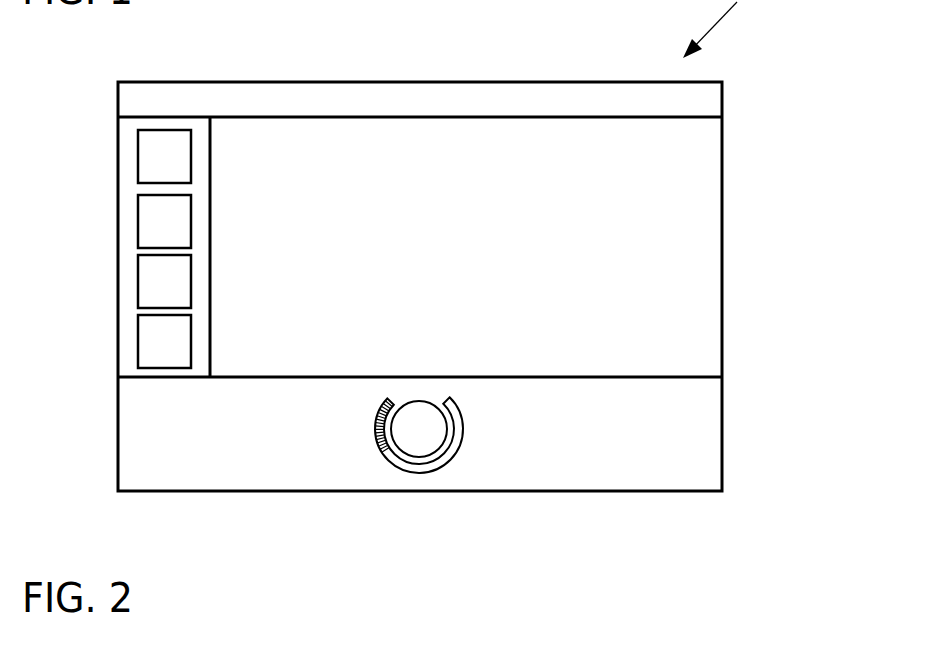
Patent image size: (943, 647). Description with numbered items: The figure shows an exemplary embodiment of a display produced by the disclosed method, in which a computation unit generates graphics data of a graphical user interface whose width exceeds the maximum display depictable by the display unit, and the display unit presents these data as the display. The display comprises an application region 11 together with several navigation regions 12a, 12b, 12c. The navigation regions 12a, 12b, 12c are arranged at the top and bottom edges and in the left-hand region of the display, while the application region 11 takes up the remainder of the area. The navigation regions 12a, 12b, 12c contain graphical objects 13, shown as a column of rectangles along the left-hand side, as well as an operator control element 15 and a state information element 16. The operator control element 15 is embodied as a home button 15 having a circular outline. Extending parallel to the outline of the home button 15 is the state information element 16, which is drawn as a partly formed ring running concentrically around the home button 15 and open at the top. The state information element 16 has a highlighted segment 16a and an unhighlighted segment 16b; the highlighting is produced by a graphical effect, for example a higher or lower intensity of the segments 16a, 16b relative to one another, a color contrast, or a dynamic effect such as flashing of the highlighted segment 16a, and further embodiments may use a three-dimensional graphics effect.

The application region 11 is at (692, 312).
The navigation region 12a is at (689, 104).
The navigation region 12b is at (127, 128).
The navigation region 12c is at (677, 438).
The graphical objects 13 is at (167, 162).
The operator control element 15 is at (437, 437).
The state information element 16 is at (355, 452).
The highlighted segment 16a is at (387, 453).
The unhighlighted segment 16b is at (423, 469).